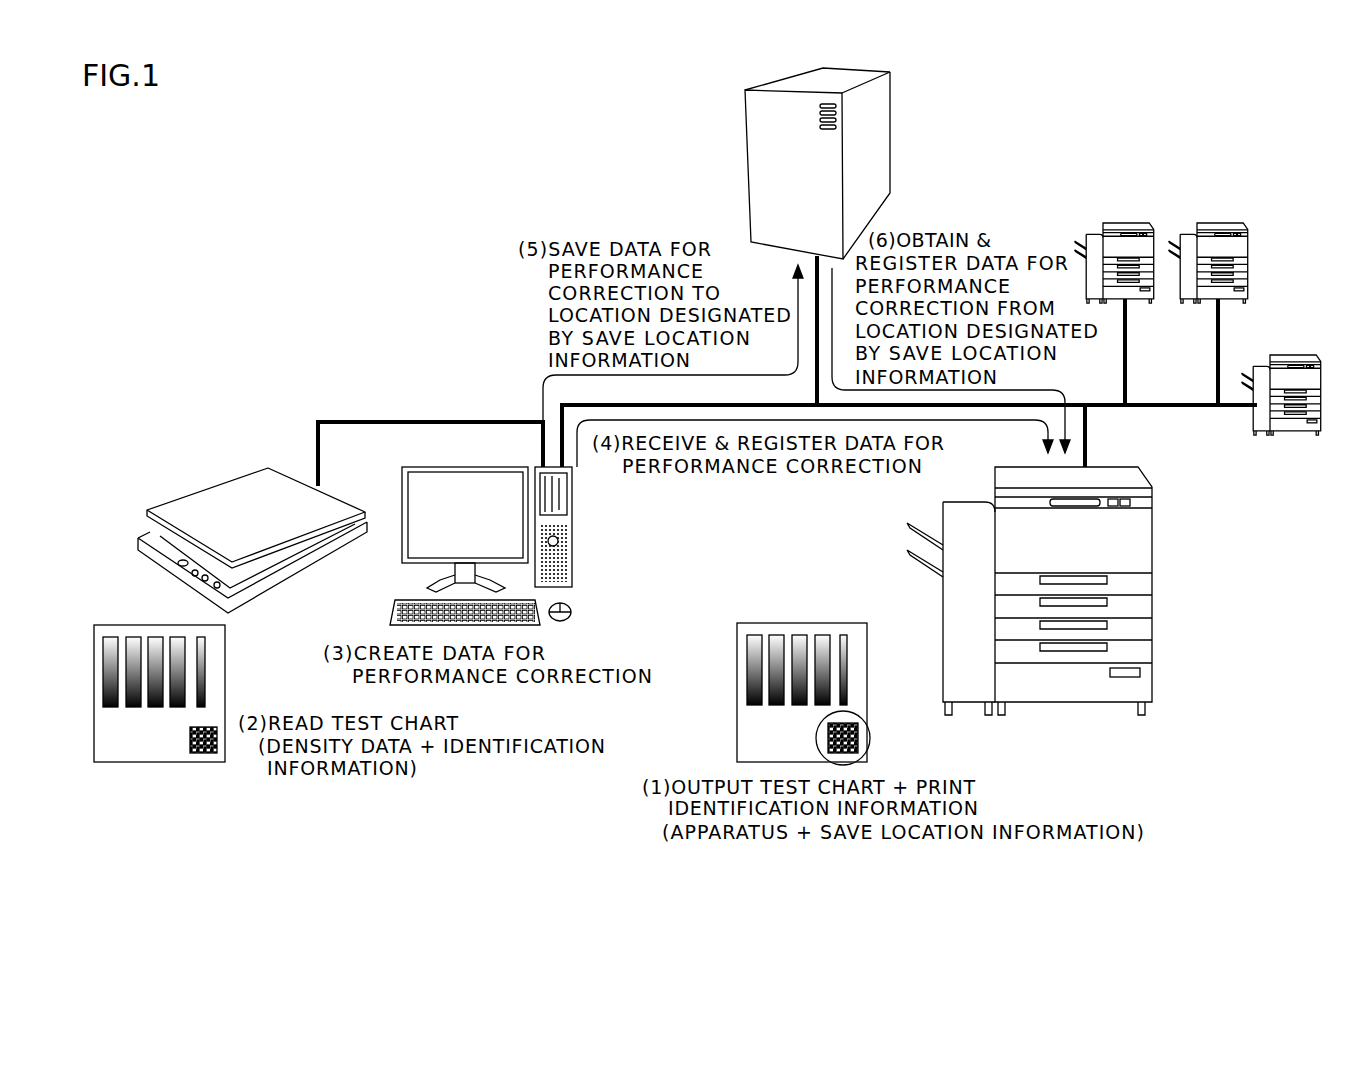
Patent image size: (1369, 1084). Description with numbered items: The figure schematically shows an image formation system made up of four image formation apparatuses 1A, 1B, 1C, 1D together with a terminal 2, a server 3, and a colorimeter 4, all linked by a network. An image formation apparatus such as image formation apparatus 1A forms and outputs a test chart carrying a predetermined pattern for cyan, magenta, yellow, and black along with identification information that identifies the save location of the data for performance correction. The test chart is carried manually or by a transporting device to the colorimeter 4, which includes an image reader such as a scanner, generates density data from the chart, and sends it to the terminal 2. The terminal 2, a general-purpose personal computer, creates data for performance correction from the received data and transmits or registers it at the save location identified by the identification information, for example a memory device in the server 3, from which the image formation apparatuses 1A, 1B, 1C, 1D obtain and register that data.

The image formation apparatus 1A is at (1153, 523).
The image formation apparatus 1B is at (1125, 222).
The image formation apparatus 1C is at (1219, 222).
The image formation apparatus 1D is at (1293, 354).
The terminal 2 is at (573, 558).
The server 3 is at (745, 112).
The colorimeter 4 is at (228, 482).